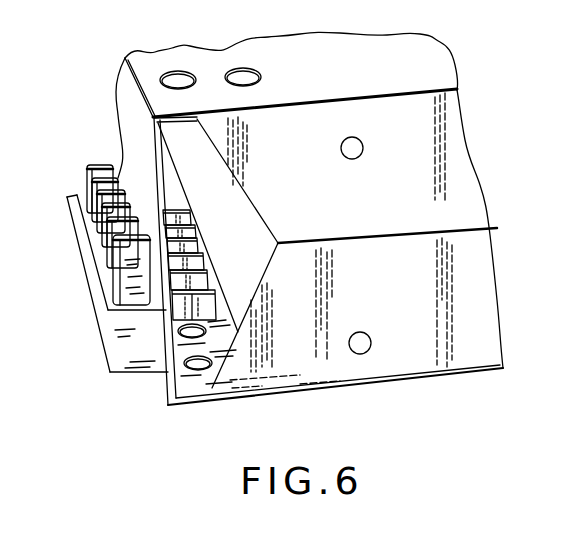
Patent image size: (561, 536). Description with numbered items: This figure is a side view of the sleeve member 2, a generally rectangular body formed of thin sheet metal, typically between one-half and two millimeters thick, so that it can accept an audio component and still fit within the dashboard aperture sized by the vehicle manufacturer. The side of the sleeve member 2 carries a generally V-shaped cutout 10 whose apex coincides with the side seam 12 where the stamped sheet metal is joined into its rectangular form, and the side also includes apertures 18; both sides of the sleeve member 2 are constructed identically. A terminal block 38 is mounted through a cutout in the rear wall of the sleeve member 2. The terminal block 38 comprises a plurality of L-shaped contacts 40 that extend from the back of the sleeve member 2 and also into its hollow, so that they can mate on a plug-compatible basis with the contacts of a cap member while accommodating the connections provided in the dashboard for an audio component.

The sleeve member 2 is at (467, 372).
The V-shaped cutout 10 is at (220, 372).
The side seam 12 is at (357, 242).
The apertures 18 is at (357, 153).
The terminal block 38 is at (117, 352).
The L-shaped contacts 40 is at (87, 173).